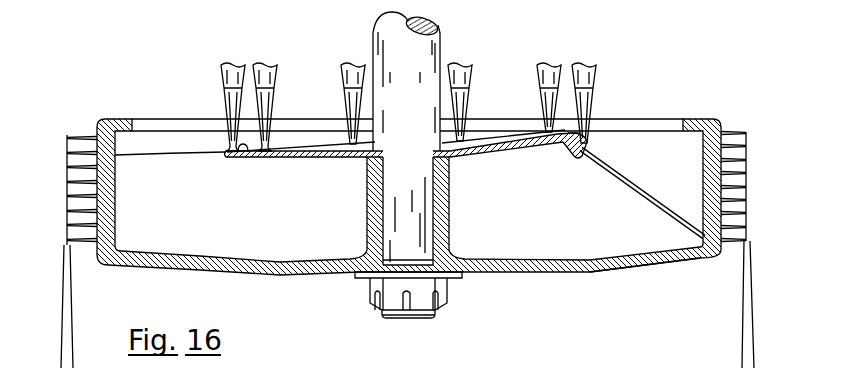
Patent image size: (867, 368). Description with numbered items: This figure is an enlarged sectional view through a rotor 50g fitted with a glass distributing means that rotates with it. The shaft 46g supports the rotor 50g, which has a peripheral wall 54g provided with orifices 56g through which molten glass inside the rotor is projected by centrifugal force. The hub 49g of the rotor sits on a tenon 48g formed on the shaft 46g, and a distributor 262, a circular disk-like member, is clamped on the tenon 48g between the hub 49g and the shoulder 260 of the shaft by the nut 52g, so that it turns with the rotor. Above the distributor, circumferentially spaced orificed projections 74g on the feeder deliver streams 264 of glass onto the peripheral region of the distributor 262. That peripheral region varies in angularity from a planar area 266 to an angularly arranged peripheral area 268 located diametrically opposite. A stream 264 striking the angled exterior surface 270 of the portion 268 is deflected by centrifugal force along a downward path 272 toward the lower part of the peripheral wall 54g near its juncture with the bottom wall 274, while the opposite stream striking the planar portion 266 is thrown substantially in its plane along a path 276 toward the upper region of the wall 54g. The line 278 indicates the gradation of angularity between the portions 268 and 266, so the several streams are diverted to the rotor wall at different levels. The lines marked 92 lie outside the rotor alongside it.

The shaft 46g is at (440, 32).
The tenon 48g is at (417, 213).
The hub 49g is at (447, 199).
The rotor 50g is at (489, 273).
The nut 52g is at (372, 294).
The peripheral wall 54g is at (110, 192).
The orifices 56g is at (110, 238).
The orificed projections 74g is at (221, 77).
The casing wall 92 is at (65, 288).
The shoulder 260 is at (449, 160).
The distributor 262 is at (348, 159).
The streams 264 is at (609, 102).
The planar area 266 is at (245, 152).
The angularly arranged peripheral area 268 is at (580, 158).
The exterior surface region 270 is at (582, 135).
The path 272 is at (628, 172).
The bottom wall 274 is at (661, 264).
The path 276 is at (152, 155).
The line 278 is at (477, 128).